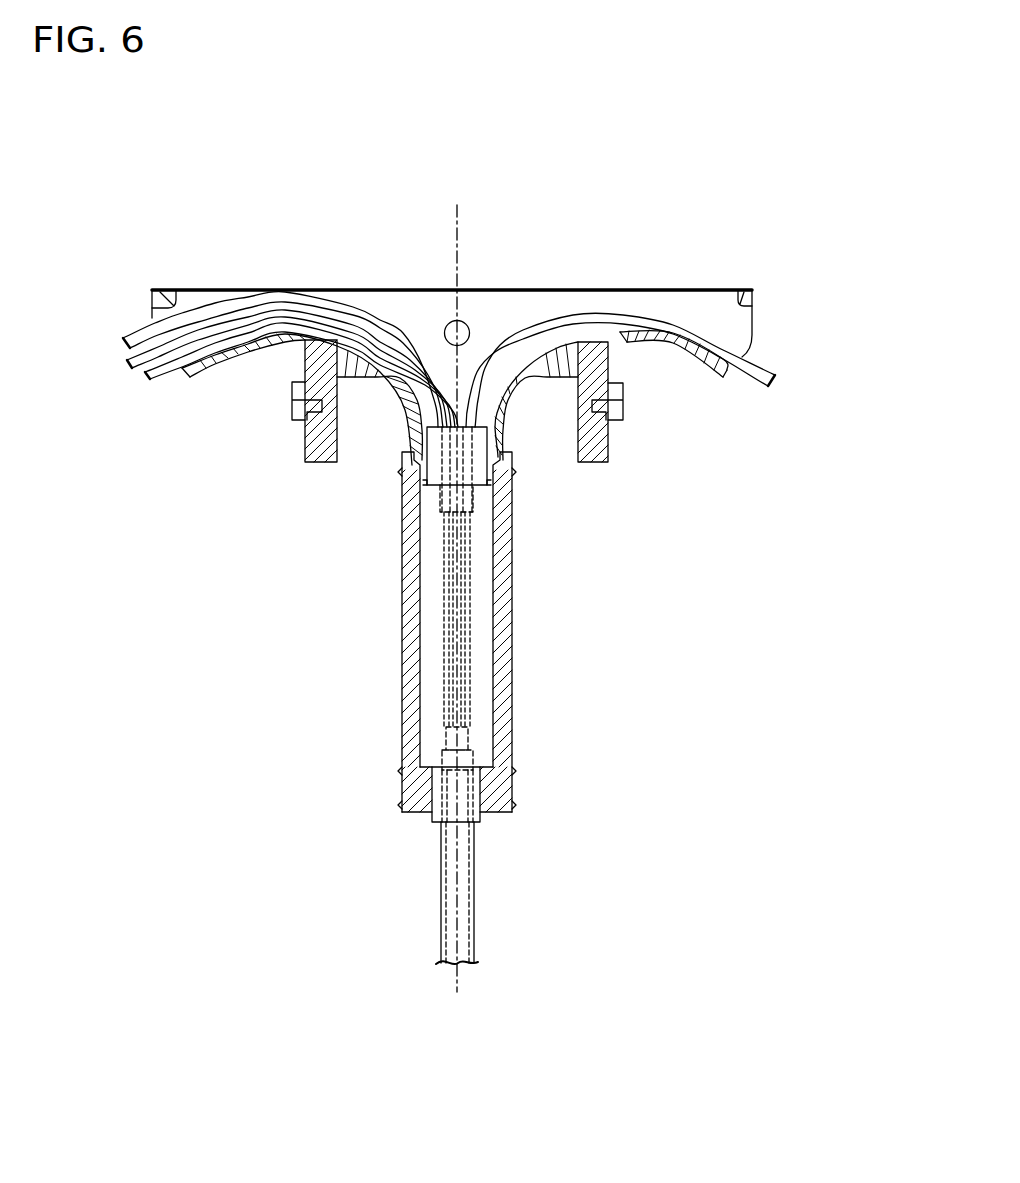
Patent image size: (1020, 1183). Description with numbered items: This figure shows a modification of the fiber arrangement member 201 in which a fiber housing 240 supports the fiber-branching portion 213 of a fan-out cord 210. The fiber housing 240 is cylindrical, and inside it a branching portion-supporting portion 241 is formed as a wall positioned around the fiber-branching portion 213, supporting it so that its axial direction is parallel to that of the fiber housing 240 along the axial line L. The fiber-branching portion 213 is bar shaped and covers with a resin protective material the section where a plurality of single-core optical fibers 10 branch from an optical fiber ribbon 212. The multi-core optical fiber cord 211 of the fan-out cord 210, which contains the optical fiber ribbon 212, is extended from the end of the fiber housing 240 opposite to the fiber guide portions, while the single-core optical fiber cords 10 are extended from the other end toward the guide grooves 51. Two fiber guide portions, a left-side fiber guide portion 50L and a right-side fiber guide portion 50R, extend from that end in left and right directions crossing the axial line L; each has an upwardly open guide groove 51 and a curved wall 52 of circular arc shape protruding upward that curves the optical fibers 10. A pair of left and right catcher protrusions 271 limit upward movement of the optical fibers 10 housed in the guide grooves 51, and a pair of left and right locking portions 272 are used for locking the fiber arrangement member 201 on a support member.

The fiber arrangement member 201 is at (698, 164).
The axial line L is at (458, 233).
The left-side fiber guide portion 50L is at (198, 296).
The right-side fiber guide portion 50R is at (712, 300).
The guide groove 51 is at (402, 305).
The curved wall 52 is at (265, 330).
The catcher protrusion 271 is at (162, 297).
The locking portion 272 is at (308, 445).
The optical fiber 10 is at (150, 386).
The fiber housing 240 is at (512, 597).
The branching portion-supporting portion 241 is at (490, 532).
The fiber-branching portion 213 is at (483, 662).
The fan-out cord 210 is at (432, 879).
The optical fiber ribbon 212 is at (470, 855).
The multi-core optical fiber cord 211 is at (474, 915).